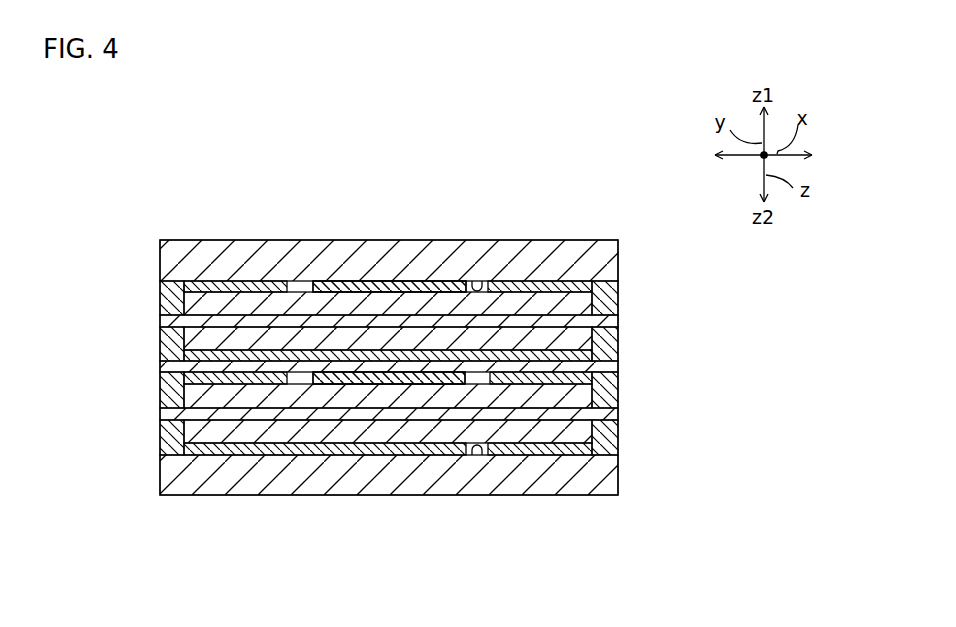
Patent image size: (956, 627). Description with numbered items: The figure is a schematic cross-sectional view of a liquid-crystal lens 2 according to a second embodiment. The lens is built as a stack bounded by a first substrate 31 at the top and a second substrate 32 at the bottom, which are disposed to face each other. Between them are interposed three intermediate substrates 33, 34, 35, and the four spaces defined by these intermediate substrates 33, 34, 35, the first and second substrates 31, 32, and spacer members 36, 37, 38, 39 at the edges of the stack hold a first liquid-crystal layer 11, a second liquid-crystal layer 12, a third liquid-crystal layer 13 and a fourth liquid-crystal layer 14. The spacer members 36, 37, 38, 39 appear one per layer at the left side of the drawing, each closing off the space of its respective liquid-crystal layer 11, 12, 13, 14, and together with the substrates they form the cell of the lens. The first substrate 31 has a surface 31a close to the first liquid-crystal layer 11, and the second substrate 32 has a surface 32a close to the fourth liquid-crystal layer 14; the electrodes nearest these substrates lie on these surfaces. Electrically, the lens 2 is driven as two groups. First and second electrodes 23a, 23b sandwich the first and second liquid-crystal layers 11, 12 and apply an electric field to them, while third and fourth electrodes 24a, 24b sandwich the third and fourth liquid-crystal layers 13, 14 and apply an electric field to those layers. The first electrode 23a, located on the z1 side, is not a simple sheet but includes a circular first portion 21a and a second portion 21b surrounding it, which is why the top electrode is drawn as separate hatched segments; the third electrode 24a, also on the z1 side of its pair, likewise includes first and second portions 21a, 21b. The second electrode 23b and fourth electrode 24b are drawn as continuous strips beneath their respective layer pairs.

The liquid-crystal lens 2 is at (585, 209).
The first liquid-crystal layer 11 is at (619, 298).
The second liquid-crystal layer 12 is at (619, 343).
The third liquid-crystal layer 13 is at (619, 390).
The fourth liquid-crystal layer 14 is at (619, 437).
The first portion 21a is at (392, 280).
The second portion 21b is at (262, 280).
The first electrode 23a is at (344, 278).
The second electrode 23b is at (405, 350).
The third electrode 24a is at (337, 385).
The fourth electrode 24b is at (392, 457).
The first substrate 31 is at (619, 252).
The surface of the first substrate 31a is at (487, 281).
The second substrate 32 is at (619, 477).
The surface of the second substrate 32a is at (485, 460).
The intermediate substrate 33 is at (619, 321).
The intermediate substrate 34 is at (619, 366).
The intermediate substrate 35 is at (619, 414).
The spacer member 36 is at (160, 300).
The spacer member 37 is at (160, 349).
The spacer member 38 is at (160, 396).
The spacer member 39 is at (160, 441).